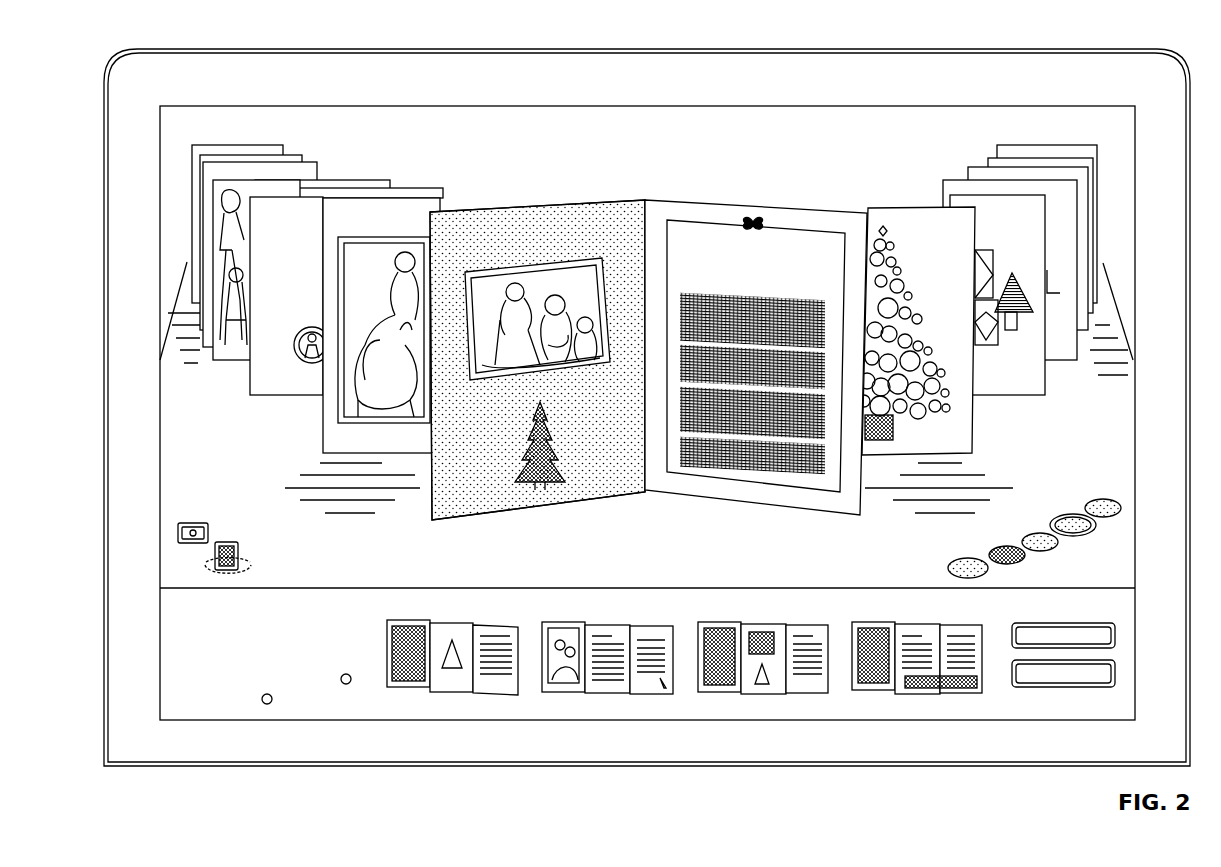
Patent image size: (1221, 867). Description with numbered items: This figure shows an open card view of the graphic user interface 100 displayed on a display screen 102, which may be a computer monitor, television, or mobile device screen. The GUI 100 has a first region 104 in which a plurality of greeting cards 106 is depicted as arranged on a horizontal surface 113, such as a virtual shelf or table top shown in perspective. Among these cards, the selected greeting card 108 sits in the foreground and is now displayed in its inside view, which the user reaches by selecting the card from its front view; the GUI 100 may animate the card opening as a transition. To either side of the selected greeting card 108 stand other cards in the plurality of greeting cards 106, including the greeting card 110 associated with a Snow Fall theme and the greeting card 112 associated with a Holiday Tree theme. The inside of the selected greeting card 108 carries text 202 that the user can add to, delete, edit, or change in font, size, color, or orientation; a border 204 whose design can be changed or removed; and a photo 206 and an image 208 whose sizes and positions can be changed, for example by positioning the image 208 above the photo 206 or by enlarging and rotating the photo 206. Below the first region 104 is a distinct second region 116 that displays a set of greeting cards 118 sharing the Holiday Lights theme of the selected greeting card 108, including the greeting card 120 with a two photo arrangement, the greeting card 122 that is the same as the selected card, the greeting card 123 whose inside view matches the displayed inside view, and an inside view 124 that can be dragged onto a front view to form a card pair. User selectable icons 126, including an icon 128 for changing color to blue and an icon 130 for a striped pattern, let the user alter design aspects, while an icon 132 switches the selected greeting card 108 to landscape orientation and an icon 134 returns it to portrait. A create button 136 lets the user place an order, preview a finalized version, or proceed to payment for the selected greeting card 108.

The graphic user interface 100 is at (647, 405).
The display screen 102 is at (208, 68).
The first region 104 is at (172, 420).
The plurality of greeting cards 106 is at (683, 318).
The selected greeting card 108 is at (648, 352).
The greeting card 110 is at (305, 225).
The greeting card 112 is at (948, 220).
The horizontal surface 113 is at (712, 566).
The second region 116 is at (325, 715).
The set of greeting cards 118 is at (669, 715).
The greeting card 120 is at (405, 688).
The greeting card 122 is at (565, 690).
The greeting card 123 is at (730, 690).
The inside view 124 is at (935, 690).
The user selectable icons 126 is at (1035, 502).
The icon 128 is at (1078, 535).
The icon 130 is at (995, 541).
The icon 132 is at (190, 525).
The icon 134 is at (230, 545).
The create button 136 is at (1095, 675).
The text 202 is at (808, 320).
The border 204 is at (756, 331).
The photo 206 is at (520, 275).
The image 208 is at (540, 488).